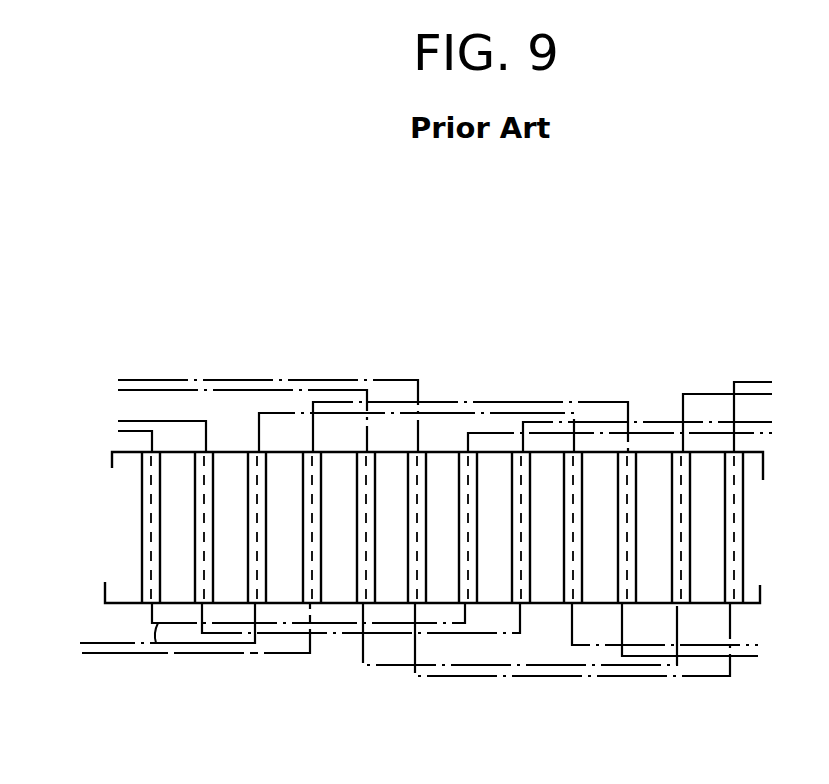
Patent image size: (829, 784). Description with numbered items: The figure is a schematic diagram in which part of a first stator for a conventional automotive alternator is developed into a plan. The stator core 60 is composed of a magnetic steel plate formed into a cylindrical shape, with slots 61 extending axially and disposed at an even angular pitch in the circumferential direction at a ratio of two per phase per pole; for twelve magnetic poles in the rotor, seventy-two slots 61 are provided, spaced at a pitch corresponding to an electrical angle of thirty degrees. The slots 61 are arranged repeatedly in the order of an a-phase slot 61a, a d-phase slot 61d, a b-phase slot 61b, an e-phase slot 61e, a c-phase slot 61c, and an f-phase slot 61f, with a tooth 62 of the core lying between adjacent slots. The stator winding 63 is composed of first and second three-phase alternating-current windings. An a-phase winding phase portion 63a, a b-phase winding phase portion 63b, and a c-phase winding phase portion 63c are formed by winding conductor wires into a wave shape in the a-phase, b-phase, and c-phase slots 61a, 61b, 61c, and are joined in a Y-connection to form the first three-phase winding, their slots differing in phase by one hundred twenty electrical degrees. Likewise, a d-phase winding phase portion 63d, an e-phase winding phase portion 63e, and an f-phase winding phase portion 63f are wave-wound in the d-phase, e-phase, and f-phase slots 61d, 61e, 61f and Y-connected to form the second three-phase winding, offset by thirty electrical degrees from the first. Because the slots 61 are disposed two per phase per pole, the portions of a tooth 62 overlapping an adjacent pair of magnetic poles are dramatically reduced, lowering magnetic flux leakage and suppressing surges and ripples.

The stator core 60 is at (55, 452).
The slots 61 is at (142, 494).
The tooth 62 is at (177, 486).
The a-phase slot 61a is at (142, 556).
The b-phase slot 61b is at (248, 536).
The c-phase slot 61c is at (357, 546).
The d-phase slot 61d is at (196, 553).
The e-phase slot 61e is at (303, 541).
The f-phase slot 61f is at (408, 538).
The stator winding 63 is at (120, 661).
The a-phase winding phase portion 63a is at (160, 656).
The b-phase winding phase portion 63b is at (199, 652).
The c-phase winding phase portion 63c is at (392, 667).
The d-phase winding phase portion 63d is at (243, 645).
The e-phase winding phase portion 63e is at (278, 655).
The f-phase winding phase portion 63f is at (455, 677).